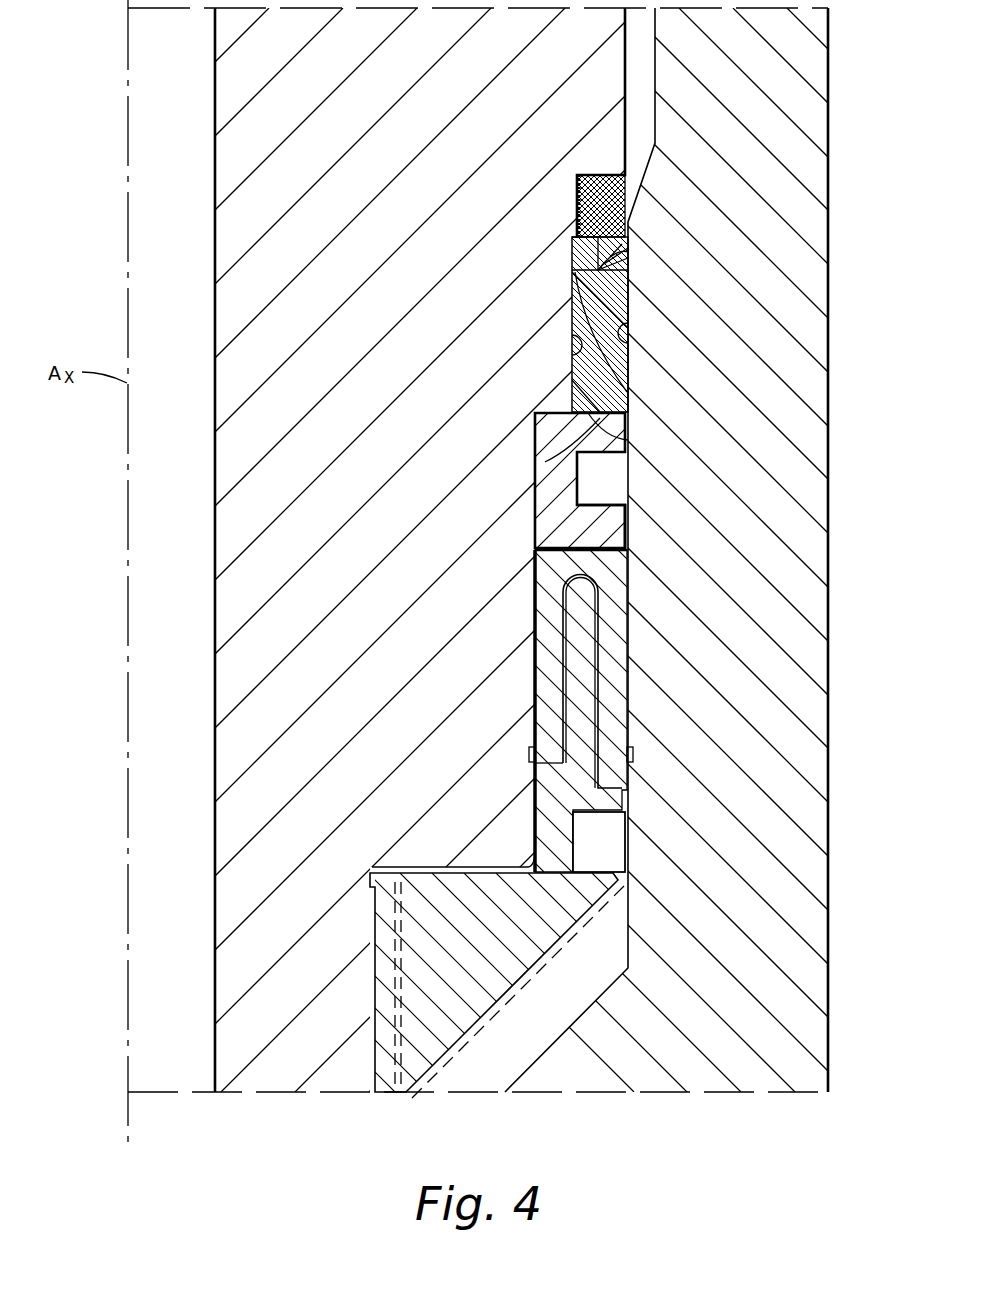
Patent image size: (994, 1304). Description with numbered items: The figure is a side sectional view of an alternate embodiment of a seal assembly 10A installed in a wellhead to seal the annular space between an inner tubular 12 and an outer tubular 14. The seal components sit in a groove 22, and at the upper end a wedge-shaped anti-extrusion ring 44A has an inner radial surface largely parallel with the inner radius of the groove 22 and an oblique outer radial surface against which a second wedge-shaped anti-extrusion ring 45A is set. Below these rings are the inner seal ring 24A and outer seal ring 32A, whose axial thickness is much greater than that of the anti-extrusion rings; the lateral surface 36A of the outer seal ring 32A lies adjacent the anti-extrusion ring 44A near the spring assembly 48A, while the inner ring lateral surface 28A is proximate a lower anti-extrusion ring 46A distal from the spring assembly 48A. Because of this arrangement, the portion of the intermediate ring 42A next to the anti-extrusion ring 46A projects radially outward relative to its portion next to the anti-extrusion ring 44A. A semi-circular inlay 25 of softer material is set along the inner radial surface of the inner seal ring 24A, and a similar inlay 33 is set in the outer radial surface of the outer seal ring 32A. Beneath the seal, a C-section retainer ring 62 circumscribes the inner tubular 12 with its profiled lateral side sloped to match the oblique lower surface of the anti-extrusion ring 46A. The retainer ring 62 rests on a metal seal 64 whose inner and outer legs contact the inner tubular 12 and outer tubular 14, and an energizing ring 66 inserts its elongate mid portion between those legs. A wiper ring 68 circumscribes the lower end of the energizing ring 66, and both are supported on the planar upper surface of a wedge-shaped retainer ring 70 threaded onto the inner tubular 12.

The seal assembly 10A is at (650, 356).
The inner tubular 12 is at (215, 100).
The outer tubular 14 is at (818, 543).
The groove 22 is at (560, 292).
The inner seal ring 24A is at (575, 394).
The inlay 25 is at (578, 346).
The inner ring lateral surface 28A is at (560, 452).
The outer seal ring 32A is at (612, 297).
The inlay 33 is at (622, 334).
The lateral surface 36A is at (612, 262).
The intermediate ring 42A is at (628, 380).
The anti-extrusion ring 44A is at (572, 258).
The anti-extrusion ring 45A is at (615, 250).
The lower anti-extrusion ring 46A is at (628, 430).
The spring assembly 48A is at (642, 192).
The retainer ring 62 is at (612, 516).
The metal seal 64 is at (630, 672).
The energizing ring 66 is at (598, 796).
The wiper ring 68 is at (607, 838).
The retainer ring 70 is at (497, 1008).